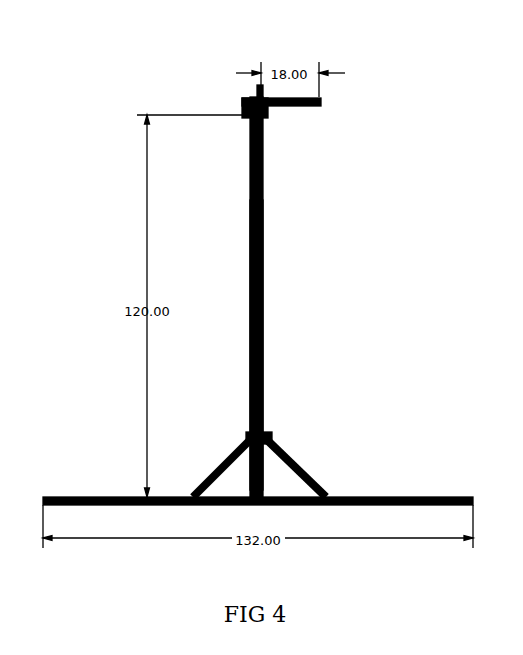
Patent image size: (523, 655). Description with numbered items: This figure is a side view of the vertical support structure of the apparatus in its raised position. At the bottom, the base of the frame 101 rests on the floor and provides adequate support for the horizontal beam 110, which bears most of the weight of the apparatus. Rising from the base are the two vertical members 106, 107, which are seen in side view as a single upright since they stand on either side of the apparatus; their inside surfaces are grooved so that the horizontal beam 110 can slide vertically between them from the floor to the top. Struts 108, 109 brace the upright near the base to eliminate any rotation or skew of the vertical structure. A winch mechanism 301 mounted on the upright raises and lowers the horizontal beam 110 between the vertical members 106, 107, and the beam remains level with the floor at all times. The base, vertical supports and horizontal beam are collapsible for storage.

The base of the frame 101 is at (356, 490).
The vertical member 106 is at (275, 268).
The vertical member 107 is at (256, 345).
The strut 108 is at (215, 452).
The strut 109 is at (295, 467).
The horizontal beam 110 is at (270, 112).
The winch mechanism 301 is at (272, 438).